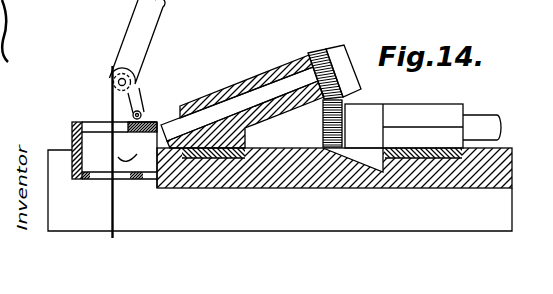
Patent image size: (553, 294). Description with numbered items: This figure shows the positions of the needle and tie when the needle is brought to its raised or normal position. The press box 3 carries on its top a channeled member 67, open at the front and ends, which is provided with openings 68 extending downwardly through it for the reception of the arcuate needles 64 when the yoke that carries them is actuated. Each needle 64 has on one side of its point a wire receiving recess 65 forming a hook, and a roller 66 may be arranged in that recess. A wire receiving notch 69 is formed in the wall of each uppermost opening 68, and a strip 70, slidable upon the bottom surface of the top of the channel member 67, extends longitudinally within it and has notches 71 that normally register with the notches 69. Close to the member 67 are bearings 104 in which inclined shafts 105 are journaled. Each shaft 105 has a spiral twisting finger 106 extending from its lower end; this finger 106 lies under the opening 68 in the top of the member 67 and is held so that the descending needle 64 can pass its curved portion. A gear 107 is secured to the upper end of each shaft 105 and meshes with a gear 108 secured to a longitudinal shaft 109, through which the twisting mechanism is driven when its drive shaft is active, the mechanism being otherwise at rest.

The press box 3 is at (512, 149).
The arcuate needle 64 is at (131, 27).
The wire receiving recess 65 is at (111, 69).
The roller 66 is at (140, 73).
The channeled member 67 is at (72, 130).
The opening 68 is at (95, 120).
The wire receiving notch 69 is at (143, 108).
The strip 70 is at (157, 122).
The notch in strip 71 is at (134, 123).
The bearing 104 is at (250, 83).
The inclined shaft 105 is at (217, 115).
The spiral twisting finger 106 is at (147, 181).
The gear 107 is at (318, 51).
The gear 108 is at (324, 114).
The longitudinal shaft 109 is at (482, 125).